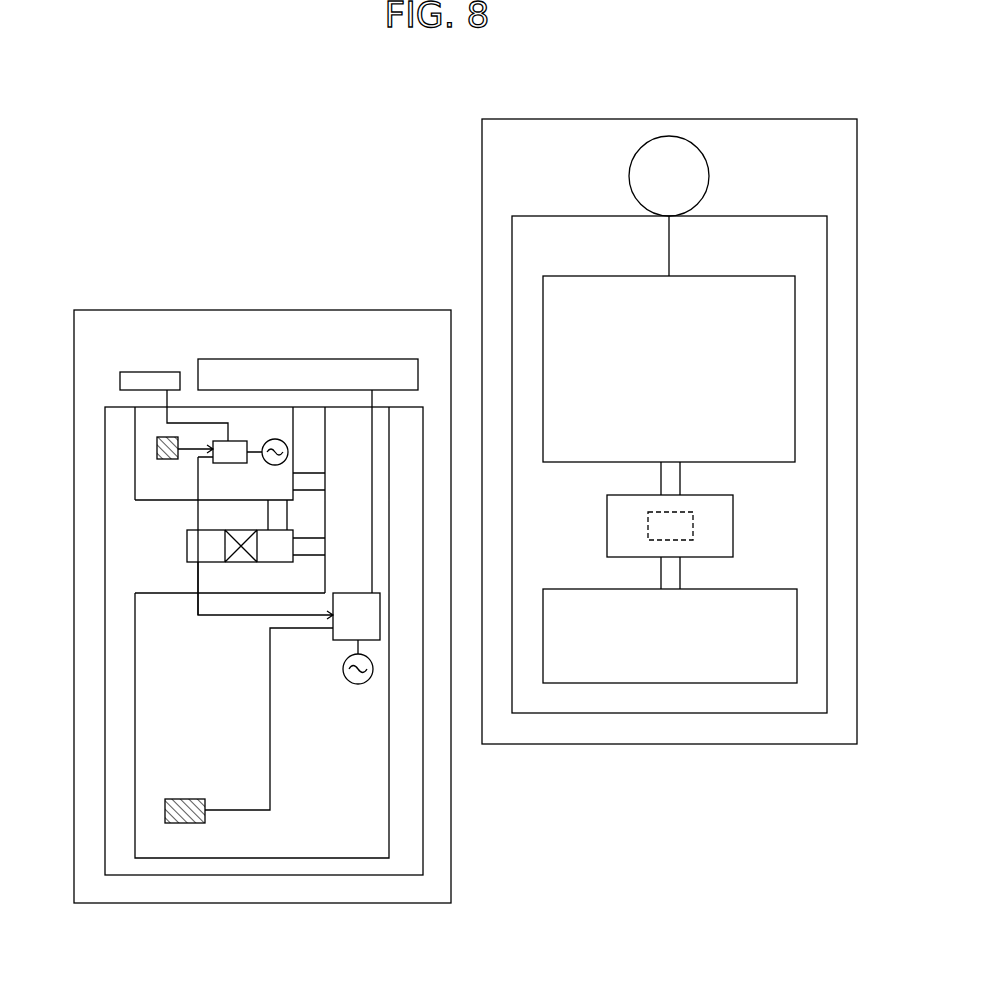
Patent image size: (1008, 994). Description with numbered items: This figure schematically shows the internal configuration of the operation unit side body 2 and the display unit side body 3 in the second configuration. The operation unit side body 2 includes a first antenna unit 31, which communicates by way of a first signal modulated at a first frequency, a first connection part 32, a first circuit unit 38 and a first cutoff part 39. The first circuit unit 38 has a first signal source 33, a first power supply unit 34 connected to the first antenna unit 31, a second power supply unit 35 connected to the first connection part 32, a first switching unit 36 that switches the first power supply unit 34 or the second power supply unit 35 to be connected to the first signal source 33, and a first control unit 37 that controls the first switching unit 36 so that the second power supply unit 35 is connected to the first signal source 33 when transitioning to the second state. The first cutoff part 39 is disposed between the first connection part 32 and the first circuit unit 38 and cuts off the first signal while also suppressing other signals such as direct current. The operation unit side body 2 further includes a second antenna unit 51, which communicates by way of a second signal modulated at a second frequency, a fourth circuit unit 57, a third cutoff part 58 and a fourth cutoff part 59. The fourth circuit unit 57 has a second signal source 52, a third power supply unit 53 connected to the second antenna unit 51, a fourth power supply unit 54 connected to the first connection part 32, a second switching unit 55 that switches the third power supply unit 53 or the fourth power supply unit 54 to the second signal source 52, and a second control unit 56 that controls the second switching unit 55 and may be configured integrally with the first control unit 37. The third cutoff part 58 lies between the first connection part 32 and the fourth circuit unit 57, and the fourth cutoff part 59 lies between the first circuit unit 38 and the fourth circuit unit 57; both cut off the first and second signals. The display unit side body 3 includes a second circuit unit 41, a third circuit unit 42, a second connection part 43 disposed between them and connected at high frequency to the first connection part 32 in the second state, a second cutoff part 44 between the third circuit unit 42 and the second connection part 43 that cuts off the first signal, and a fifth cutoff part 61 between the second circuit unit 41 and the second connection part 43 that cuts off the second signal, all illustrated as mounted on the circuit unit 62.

The operation unit side body 2 is at (90, 319).
The display unit side body 3 is at (770, 125).
The first antenna unit 31 is at (268, 370).
The first connection part 32 is at (187, 547).
The first signal source 33 is at (360, 685).
The first power supply unit 34 is at (372, 578).
The second power supply unit 35 is at (223, 618).
The first switching unit 36 is at (343, 635).
The first control unit 37 is at (188, 799).
The first circuit unit 38 is at (353, 837).
The first cutoff part 39 is at (310, 548).
The second circuit unit 41 is at (769, 283).
The third circuit unit 42 is at (717, 670).
The second connection part 43 is at (693, 520).
The second cutoff part 44 is at (677, 568).
The second antenna unit 51 is at (135, 378).
The second signal source 52 is at (267, 440).
The third power supply unit 53 is at (193, 423).
The fourth power supply unit 54 is at (197, 478).
The second switching unit 55 is at (233, 455).
The second control unit 56 is at (155, 452).
The fourth circuit unit 57 is at (143, 490).
The third cutoff part 58 is at (270, 522).
The fourth cutoff part 59 is at (310, 480).
The fifth cutoff part 61 is at (677, 475).
The circuit unit 62 is at (813, 685).